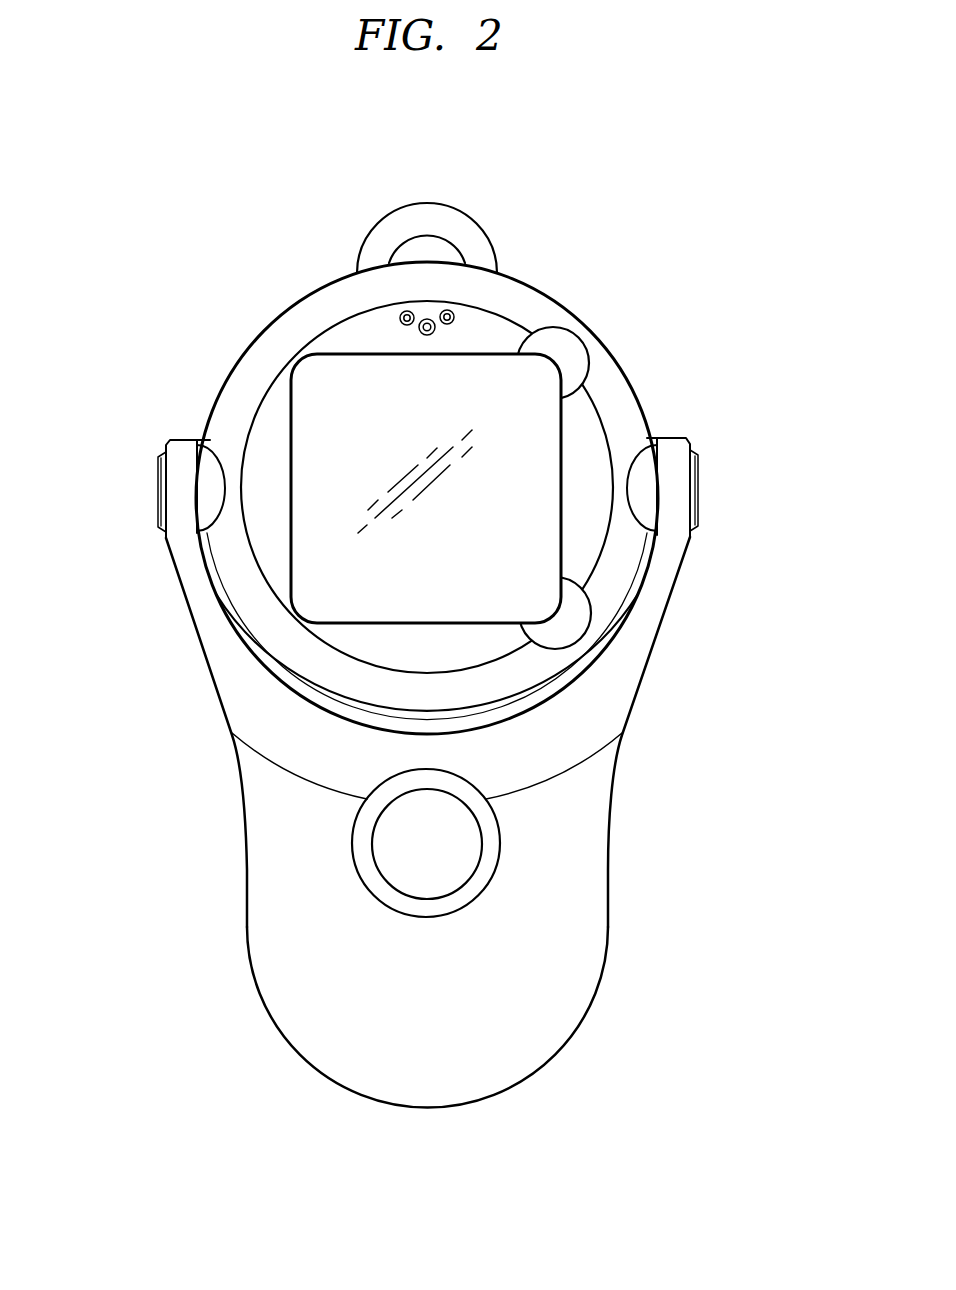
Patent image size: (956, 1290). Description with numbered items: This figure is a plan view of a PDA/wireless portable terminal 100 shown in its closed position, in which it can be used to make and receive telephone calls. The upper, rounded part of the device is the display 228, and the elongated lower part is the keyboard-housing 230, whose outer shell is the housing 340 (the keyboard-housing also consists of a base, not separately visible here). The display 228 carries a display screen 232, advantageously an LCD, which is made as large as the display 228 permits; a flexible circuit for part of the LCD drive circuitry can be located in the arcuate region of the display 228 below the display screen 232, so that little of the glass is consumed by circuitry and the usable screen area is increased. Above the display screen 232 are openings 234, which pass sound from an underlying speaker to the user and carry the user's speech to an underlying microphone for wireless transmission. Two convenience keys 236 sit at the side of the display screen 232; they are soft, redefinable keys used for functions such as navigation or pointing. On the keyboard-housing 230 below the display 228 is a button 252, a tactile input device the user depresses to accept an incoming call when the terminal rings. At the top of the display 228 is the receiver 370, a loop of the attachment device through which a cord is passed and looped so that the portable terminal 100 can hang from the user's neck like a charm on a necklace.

The portable terminal 100 is at (733, 242).
The display 228 is at (281, 319).
The keyboard-housing 230 is at (142, 797).
The display screen 232 is at (307, 440).
The openings 234 is at (429, 318).
The convenience keys 236 is at (568, 348).
The button 252 is at (452, 838).
The housing 340 is at (282, 1040).
The receiver 370 is at (392, 228).